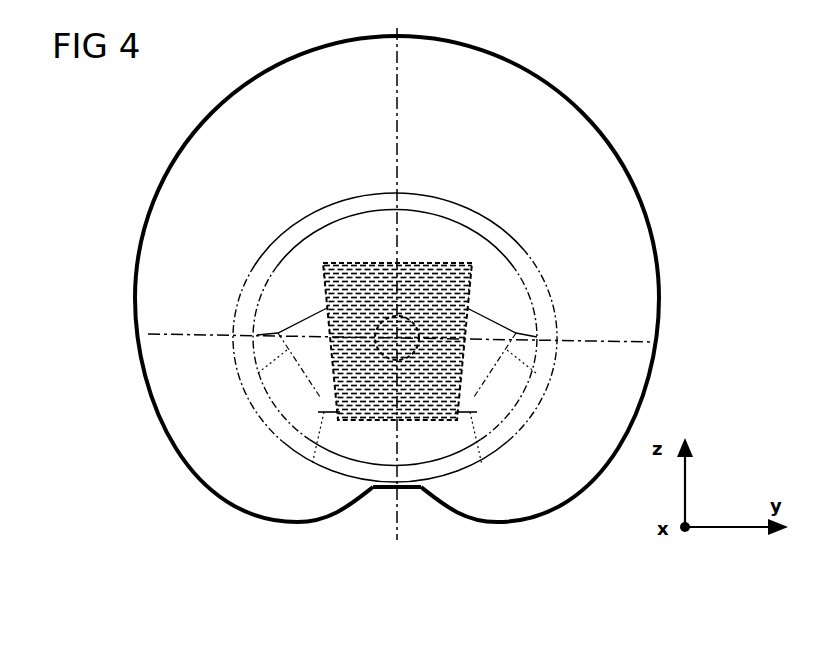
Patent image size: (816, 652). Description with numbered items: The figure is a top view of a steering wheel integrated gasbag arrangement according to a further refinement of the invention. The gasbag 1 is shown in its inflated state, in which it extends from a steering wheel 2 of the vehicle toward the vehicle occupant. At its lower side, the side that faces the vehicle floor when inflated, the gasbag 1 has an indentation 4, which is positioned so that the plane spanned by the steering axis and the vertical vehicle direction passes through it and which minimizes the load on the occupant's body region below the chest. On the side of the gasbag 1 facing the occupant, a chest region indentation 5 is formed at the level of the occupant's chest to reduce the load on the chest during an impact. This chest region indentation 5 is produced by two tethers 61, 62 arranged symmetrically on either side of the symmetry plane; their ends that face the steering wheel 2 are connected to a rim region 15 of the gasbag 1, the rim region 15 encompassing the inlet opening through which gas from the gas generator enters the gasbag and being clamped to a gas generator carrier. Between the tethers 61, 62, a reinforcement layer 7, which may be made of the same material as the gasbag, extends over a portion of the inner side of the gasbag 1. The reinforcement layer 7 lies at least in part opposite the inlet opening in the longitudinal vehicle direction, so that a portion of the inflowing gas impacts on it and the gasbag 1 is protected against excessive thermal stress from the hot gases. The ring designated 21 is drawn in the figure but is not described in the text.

The gasbag 1 is at (663, 133).
The steering wheel 2 is at (485, 232).
The bore wall 21 is at (518, 241).
The indentation 4 is at (432, 535).
The chest region indentation 5 is at (430, 390).
The rim region 15 is at (388, 316).
The tether 61 is at (325, 305).
The tether 62 is at (467, 310).
The reinforcement layer 7 is at (372, 402).